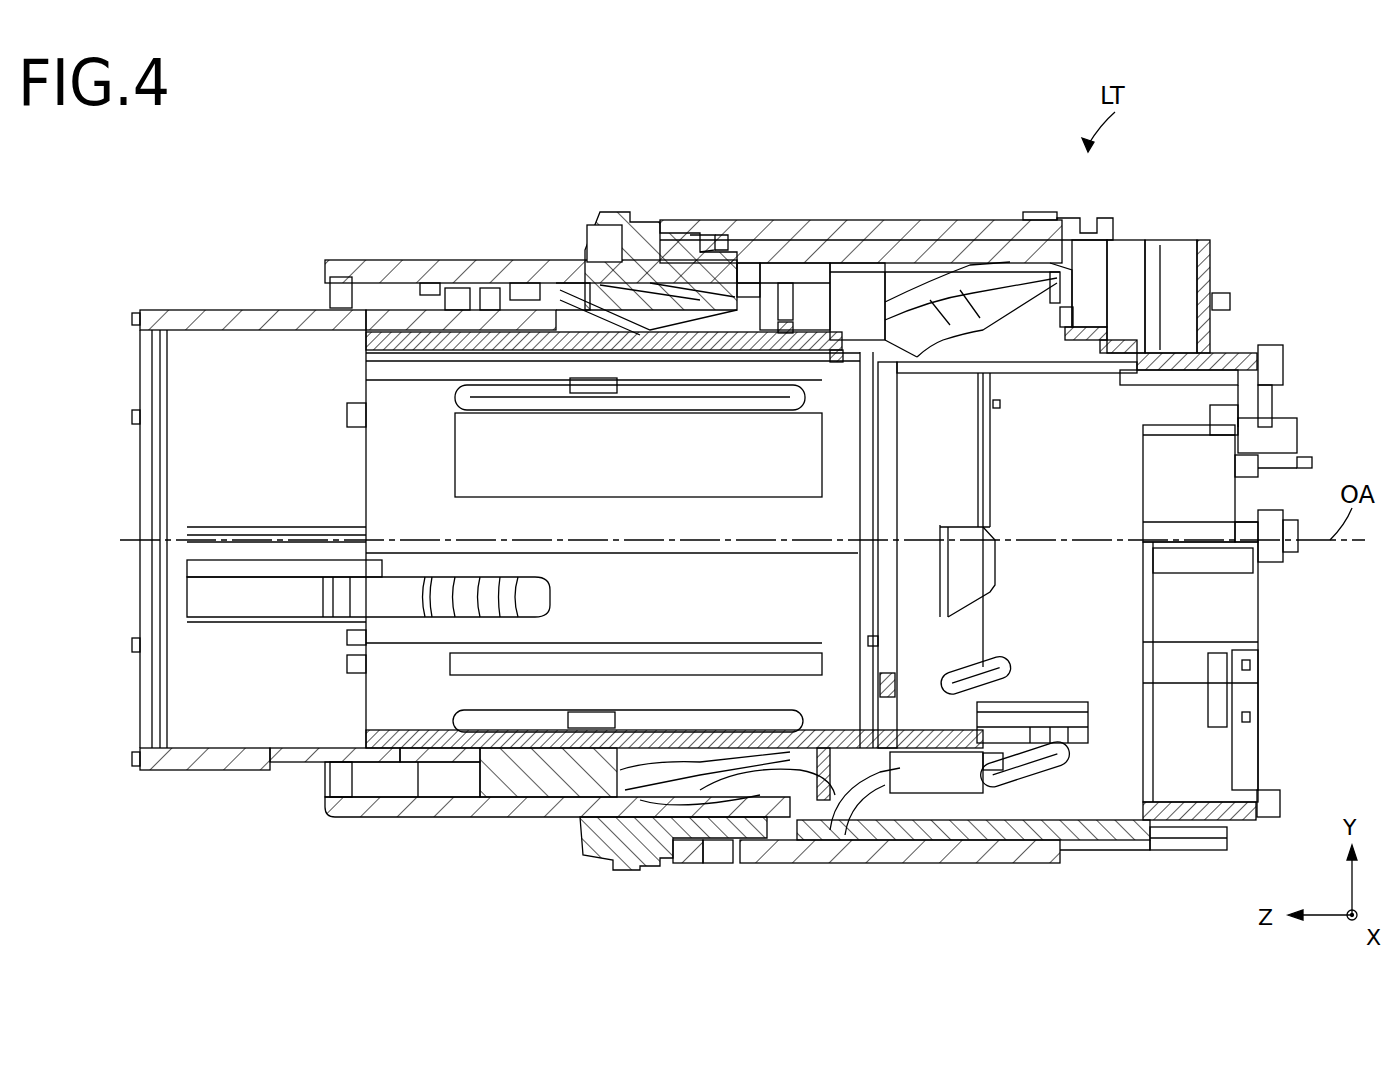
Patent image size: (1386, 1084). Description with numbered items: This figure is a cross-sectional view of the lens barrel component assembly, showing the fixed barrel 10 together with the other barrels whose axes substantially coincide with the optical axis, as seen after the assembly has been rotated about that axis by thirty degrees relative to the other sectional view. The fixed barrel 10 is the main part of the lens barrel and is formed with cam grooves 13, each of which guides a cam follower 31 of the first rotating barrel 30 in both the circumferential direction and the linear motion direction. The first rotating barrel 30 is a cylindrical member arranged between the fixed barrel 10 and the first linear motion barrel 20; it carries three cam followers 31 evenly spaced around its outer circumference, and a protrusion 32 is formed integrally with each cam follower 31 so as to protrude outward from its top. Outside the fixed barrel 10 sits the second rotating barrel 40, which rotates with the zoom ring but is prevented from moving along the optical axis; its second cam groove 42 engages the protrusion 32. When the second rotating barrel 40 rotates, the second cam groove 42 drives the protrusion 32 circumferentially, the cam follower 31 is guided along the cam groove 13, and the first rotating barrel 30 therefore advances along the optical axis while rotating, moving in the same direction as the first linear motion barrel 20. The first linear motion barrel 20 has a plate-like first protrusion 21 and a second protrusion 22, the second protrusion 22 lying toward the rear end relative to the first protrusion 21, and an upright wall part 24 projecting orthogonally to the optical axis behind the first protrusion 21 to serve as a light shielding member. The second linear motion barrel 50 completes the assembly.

The fixed barrel 10 is at (1135, 240).
The cam groove 13 is at (732, 235).
The first linear motion barrel 20 is at (366, 330).
The first protrusion 21 is at (805, 272).
The second protrusion 22 is at (958, 782).
The upright wall part 24 is at (838, 800).
The first rotating barrel 30 is at (382, 262).
The cam follower 31 is at (790, 262).
The protrusion 32 is at (700, 235).
The second rotating barrel 40 is at (908, 220).
The second cam groove 42 is at (700, 215).
The second linear motion barrel 50 is at (205, 310).